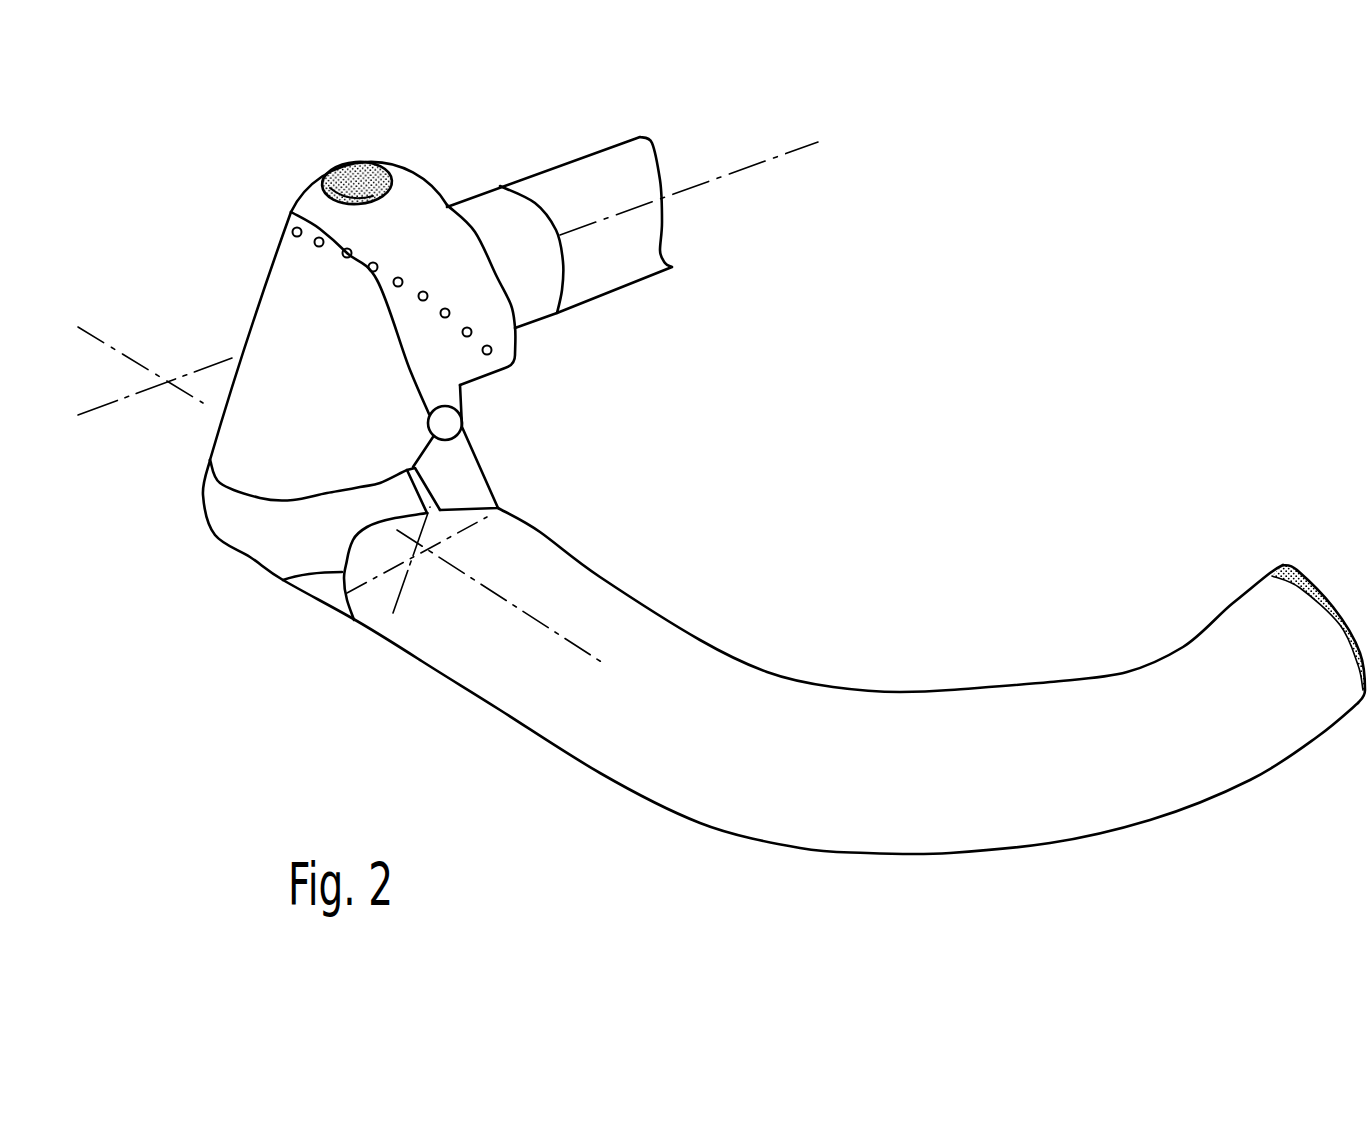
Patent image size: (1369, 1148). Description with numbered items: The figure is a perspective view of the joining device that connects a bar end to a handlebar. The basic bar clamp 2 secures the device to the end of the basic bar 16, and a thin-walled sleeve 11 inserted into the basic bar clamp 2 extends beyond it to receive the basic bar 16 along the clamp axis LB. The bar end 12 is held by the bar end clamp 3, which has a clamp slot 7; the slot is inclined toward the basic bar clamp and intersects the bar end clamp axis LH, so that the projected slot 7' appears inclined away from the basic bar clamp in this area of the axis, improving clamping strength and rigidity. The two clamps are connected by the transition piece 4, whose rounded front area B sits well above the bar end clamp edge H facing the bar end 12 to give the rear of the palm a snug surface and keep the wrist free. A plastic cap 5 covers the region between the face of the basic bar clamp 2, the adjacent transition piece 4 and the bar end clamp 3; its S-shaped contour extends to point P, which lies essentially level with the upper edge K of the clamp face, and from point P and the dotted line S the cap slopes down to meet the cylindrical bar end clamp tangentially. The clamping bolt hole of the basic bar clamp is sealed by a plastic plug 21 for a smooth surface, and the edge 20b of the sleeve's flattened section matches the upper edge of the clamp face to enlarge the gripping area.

The basic bar clamp 2 is at (425, 187).
The plastic plug 21 is at (335, 174).
The edge 20b is at (360, 162).
The upper edge K is at (292, 212).
The plastic cap 5 is at (265, 308).
The dotted line S is at (413, 280).
The point P is at (298, 238).
The sleeve 11 is at (527, 207).
The basic bar 16 is at (622, 145).
The axis of the basic bar clamp LB is at (728, 178).
The axis of the bar end clamp LH is at (104, 343).
The transition piece 4 is at (463, 388).
The area B is at (475, 437).
The clamp slot 7 is at (408, 504).
The projected slot 7' is at (420, 569).
The bar end clamp edge H is at (290, 578).
The bar end clamp 3 is at (313, 597).
The bar end 12 is at (1140, 825).